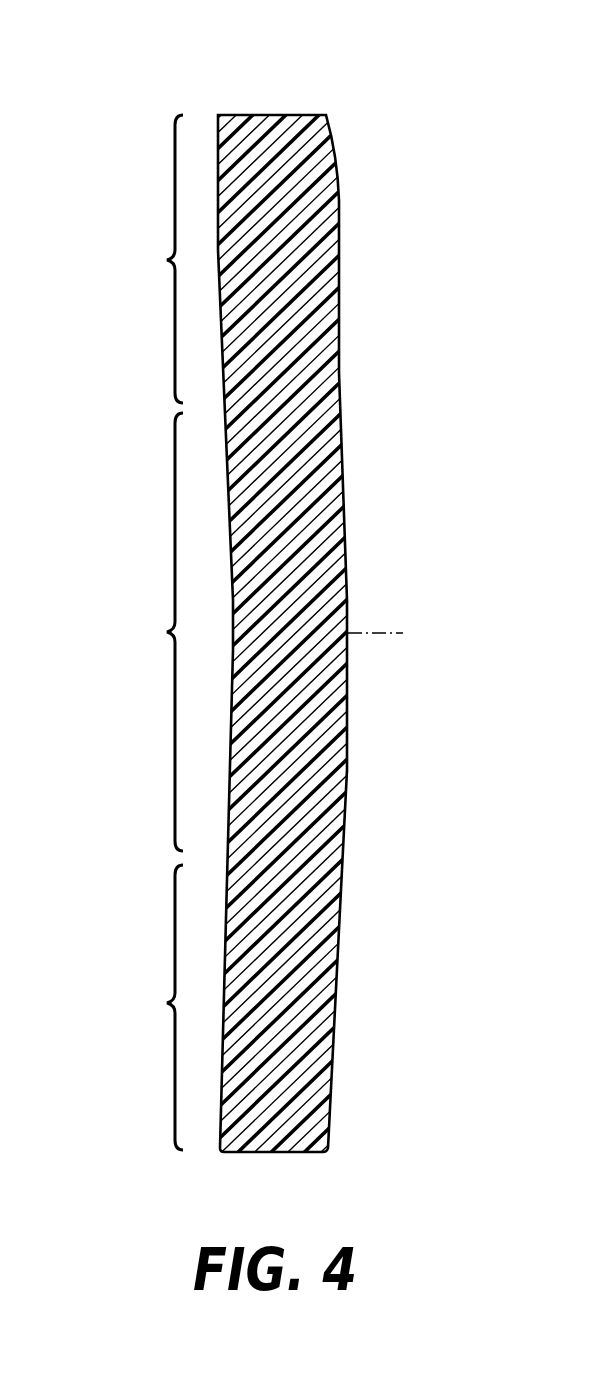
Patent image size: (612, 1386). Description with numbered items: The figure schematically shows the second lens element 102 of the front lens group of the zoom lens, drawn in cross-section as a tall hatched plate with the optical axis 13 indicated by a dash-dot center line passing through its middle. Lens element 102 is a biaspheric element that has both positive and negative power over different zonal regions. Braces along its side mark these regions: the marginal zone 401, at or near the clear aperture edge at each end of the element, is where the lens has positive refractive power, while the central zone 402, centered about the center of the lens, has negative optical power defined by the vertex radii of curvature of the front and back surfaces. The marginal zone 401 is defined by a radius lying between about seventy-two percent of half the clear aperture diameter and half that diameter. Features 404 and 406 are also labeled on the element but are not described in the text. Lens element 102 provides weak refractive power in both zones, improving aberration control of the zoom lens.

The second lens element 102 is at (370, 92).
The marginal zone 401 is at (147, 632).
The central zone 402 is at (225, 632).
The transition 404 is at (225, 862).
The outer surface 406 is at (340, 935).
The optical axis 13 is at (403, 633).